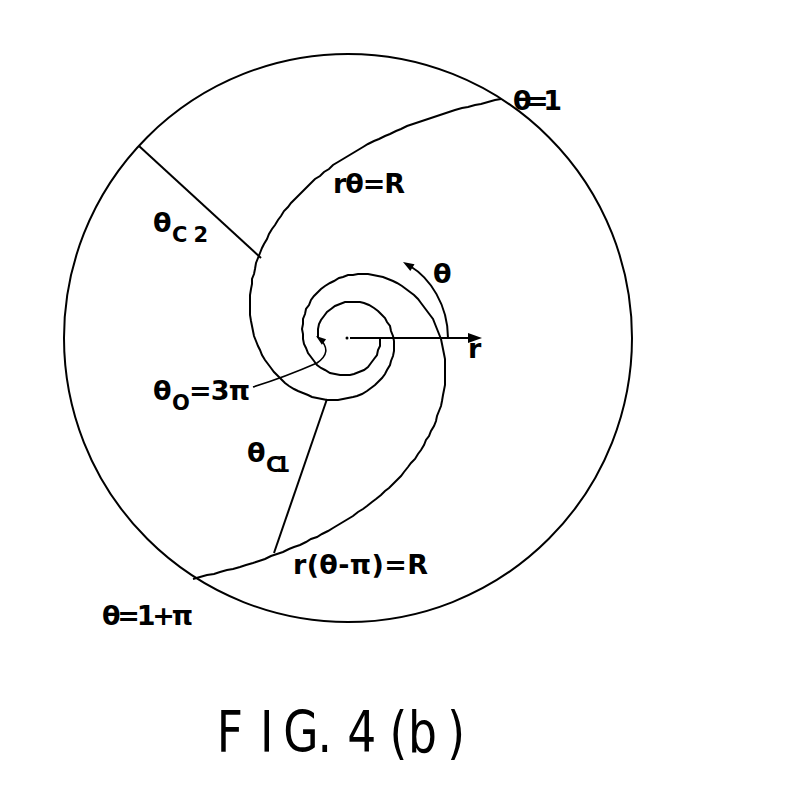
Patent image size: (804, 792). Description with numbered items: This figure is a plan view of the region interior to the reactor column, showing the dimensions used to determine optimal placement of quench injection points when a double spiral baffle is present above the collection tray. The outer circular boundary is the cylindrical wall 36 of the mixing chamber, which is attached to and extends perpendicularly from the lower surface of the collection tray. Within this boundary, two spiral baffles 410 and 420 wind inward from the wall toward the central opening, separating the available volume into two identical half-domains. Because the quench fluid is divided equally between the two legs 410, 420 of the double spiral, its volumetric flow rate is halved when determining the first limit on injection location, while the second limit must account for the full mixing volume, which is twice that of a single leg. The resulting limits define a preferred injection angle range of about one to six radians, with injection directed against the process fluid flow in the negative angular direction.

The cylindrical wall 36 is at (626, 398).
The spiral baffle 410 is at (445, 118).
The spiral baffle 420 is at (437, 421).